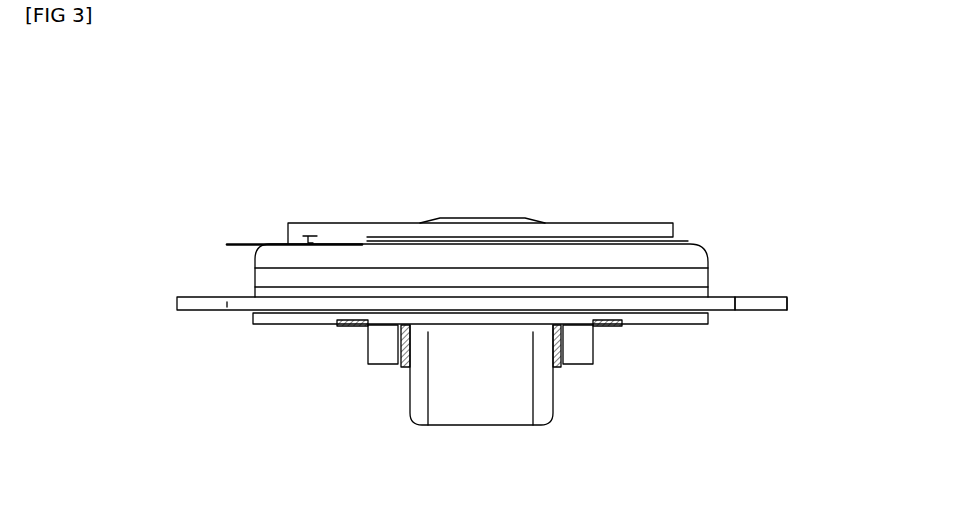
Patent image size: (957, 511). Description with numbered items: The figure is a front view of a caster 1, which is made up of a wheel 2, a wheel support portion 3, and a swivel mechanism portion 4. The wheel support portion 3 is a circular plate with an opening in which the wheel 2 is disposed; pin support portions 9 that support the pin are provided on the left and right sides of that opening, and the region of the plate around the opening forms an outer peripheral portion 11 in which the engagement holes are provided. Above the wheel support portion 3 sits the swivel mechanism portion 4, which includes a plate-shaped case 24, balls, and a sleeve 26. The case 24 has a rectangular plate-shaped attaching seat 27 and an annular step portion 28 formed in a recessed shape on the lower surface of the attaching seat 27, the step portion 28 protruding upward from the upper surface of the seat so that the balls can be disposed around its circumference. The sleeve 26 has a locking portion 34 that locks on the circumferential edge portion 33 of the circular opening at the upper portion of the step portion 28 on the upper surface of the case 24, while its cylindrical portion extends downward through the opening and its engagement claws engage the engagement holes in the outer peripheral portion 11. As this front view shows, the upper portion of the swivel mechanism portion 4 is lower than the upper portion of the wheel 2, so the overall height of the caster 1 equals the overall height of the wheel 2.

The caster 1 is at (713, 98).
The wheel 2 is at (464, 432).
The wheel support portion 3 is at (294, 334).
The swivel mechanism portion 4 is at (712, 243).
The pin support portions 9 is at (387, 367).
The outer peripheral portion 11 is at (677, 325).
The case 24 is at (790, 310).
The sleeve 26 is at (345, 224).
The attaching seat 27 is at (762, 297).
The step portion 28 is at (266, 246).
The circumferential edge portion 33 is at (632, 243).
The locking portion 34 is at (315, 224).